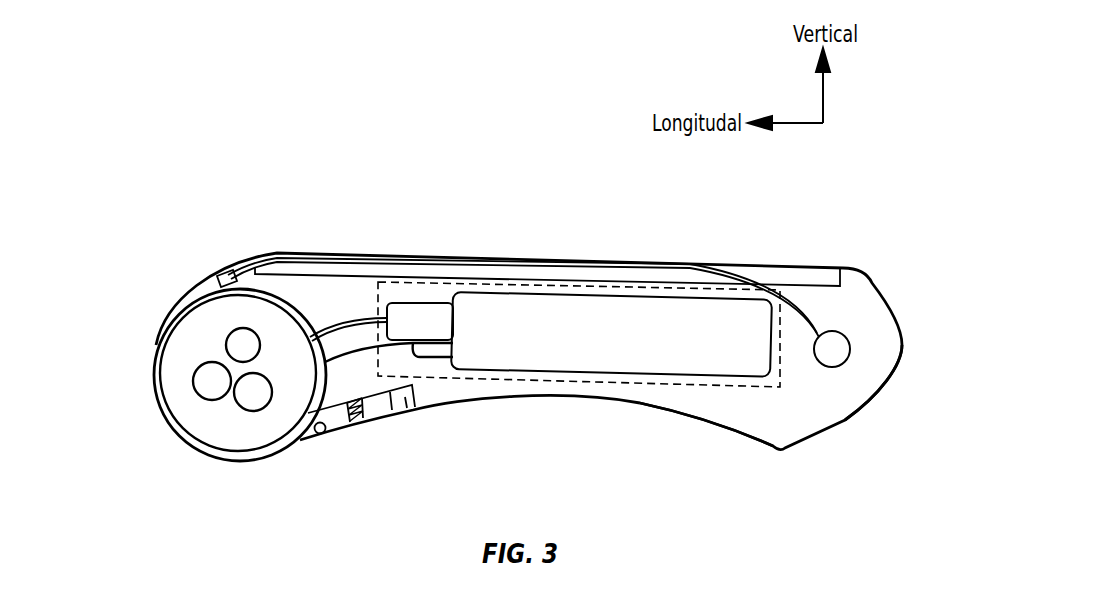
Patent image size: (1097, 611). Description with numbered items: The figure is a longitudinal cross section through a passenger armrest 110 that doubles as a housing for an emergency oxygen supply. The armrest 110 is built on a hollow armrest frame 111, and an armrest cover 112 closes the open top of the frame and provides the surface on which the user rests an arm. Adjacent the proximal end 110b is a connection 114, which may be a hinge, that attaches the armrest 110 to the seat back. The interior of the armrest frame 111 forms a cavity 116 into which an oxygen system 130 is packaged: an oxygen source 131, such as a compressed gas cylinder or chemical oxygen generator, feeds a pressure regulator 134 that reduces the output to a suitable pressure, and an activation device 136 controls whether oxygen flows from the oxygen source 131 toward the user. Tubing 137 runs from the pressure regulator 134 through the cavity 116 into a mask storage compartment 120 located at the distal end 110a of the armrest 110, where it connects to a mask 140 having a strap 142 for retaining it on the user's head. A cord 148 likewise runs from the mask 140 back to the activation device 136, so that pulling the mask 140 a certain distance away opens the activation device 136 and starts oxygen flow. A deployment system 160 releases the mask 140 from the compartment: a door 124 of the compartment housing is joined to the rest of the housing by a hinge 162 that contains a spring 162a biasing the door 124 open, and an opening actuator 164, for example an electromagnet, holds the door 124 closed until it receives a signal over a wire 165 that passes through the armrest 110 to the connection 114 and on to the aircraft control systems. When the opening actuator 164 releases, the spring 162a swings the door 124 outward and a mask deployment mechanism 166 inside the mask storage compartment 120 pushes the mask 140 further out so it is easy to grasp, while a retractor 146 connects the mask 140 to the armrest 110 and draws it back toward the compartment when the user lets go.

The passenger armrest 110 is at (800, 207).
The distal end 110a is at (155, 362).
The proximal end 110b is at (900, 364).
The armrest frame 111 is at (750, 438).
The armrest cover 112 is at (670, 257).
The connection 114 is at (840, 348).
The cavity 116 is at (765, 387).
The mask storage compartment 120 is at (220, 457).
The door 124 is at (167, 328).
The oxygen system 130 is at (580, 290).
The oxygen source 131 is at (607, 347).
The pressure regulator 134 is at (438, 320).
The activation device 136 is at (430, 356).
The tubing 137 is at (353, 320).
The mask 140 is at (185, 408).
The strap 142 is at (292, 296).
The retractor 146 is at (407, 408).
The cord 148 is at (328, 327).
The deployment system 160 is at (275, 488).
The hinge 162 is at (322, 436).
The spring 162a is at (333, 436).
The opening actuator 164 is at (224, 274).
The wire 165 is at (795, 300).
The mask deployment mechanism 166 is at (360, 422).